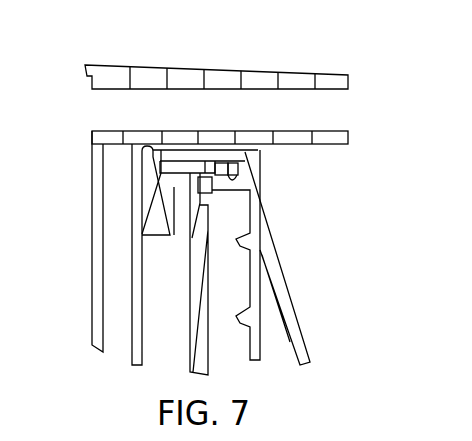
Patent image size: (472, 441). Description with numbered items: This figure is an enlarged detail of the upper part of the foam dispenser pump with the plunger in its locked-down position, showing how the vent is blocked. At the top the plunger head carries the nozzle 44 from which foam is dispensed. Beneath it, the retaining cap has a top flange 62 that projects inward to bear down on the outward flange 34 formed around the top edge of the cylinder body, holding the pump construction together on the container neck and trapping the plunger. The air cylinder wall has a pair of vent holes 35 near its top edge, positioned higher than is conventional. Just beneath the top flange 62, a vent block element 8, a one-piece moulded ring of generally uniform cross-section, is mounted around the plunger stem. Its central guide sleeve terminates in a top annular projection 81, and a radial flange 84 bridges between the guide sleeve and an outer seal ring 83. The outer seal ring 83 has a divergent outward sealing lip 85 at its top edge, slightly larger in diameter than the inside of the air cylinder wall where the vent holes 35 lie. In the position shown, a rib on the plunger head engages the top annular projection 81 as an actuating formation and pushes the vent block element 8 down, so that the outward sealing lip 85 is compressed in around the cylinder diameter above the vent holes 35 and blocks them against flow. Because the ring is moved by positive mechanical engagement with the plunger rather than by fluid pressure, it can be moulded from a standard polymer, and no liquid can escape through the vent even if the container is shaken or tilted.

The vent block element 8 is at (131, 199).
The outward flange 34 is at (222, 169).
The vent holes 35 is at (200, 206).
The nozzle 44 is at (325, 77).
The top flange 62 is at (204, 152).
The top annular projection 81 is at (152, 150).
The outer seal ring 83 is at (191, 240).
The radial flange 84 is at (180, 188).
The outward sealing lip 85 is at (196, 180).